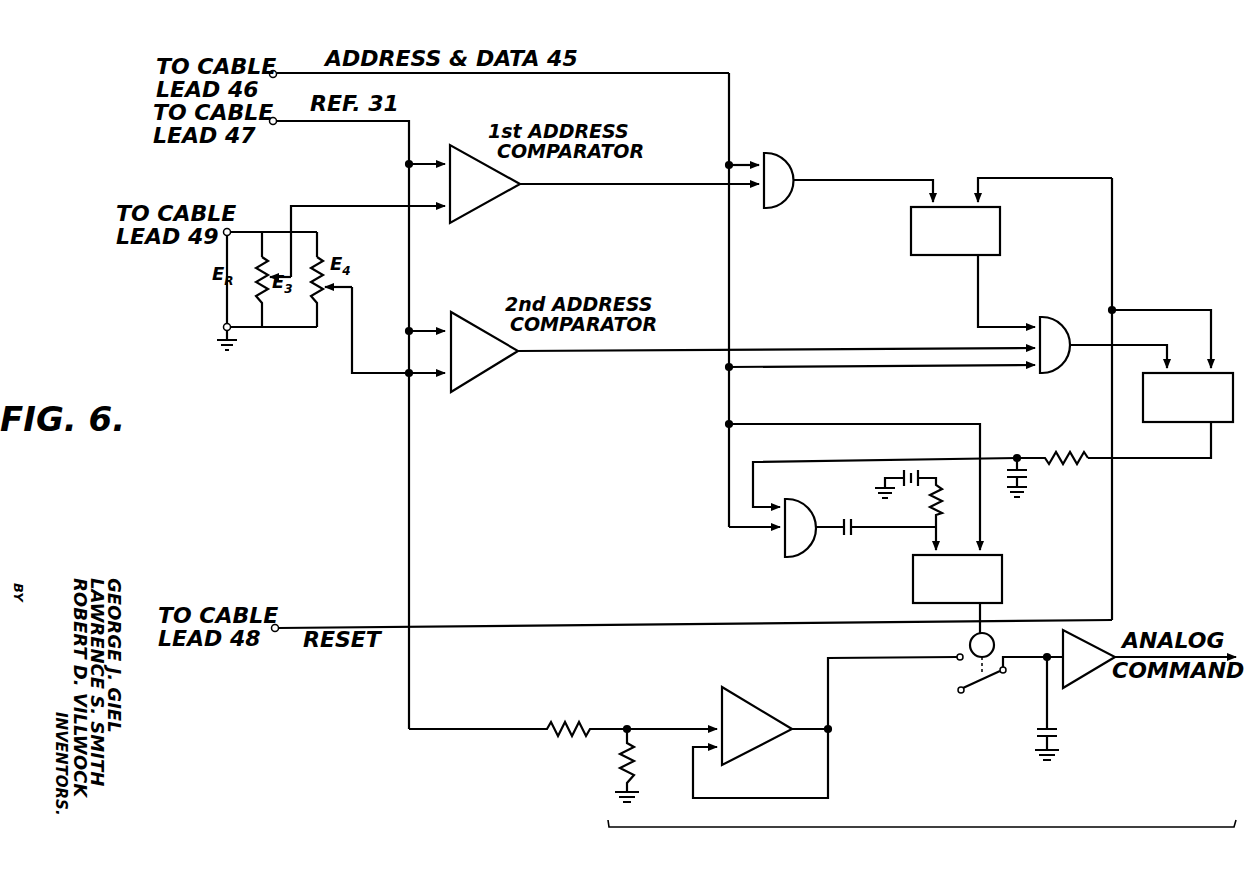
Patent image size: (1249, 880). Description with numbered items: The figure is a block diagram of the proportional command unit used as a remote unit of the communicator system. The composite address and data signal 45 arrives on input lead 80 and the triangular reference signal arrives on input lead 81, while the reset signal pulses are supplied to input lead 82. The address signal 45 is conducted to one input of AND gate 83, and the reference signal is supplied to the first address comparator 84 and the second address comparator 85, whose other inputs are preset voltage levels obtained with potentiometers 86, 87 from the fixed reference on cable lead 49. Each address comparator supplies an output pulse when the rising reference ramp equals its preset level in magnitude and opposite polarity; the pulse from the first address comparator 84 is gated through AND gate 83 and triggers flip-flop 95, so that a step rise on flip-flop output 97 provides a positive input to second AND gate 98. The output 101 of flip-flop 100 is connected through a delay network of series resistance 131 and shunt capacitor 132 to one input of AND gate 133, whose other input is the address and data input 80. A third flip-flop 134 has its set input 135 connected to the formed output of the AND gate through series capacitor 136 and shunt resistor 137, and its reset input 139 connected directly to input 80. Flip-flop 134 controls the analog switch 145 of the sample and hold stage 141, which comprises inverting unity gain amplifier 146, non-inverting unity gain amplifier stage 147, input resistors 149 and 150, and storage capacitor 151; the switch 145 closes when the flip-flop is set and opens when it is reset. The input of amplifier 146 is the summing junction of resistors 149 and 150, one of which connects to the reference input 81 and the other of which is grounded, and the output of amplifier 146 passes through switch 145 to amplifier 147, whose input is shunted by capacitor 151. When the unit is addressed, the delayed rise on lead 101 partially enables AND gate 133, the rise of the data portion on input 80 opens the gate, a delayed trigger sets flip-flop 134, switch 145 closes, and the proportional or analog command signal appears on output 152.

The input lead 80 is at (300, 72).
The input lead 81 is at (298, 123).
The composite address and data signal 45 is at (560, 70).
The cable lead 49 is at (200, 238).
The input lead 82 is at (360, 620).
The AND gate 83 is at (786, 162).
The first address comparator 84 is at (490, 130).
The second address comparator 85 is at (492, 298).
The potentiometer 86 is at (264, 303).
The potentiometer 87 is at (325, 300).
The flip-flop 95 is at (1000, 230).
The flip-flop output 97 is at (978, 290).
The second AND gate 98 is at (1062, 325).
The flip-flop 100 is at (1185, 424).
The flip-flop output 101 is at (1135, 460).
The series resistance 131 is at (1084, 436).
The shunt capacitor 132 is at (1028, 474).
The AND gate 133 is at (782, 550).
The third flip-flop 134 is at (1002, 572).
The set input 135 is at (936, 536).
The series capacitor 136 is at (852, 498).
The shunt resistor 137 is at (944, 500).
The reset input 139 is at (982, 528).
The sample and hold stage 141 is at (922, 841).
The analog switch 145 is at (970, 670).
The inverting unity gain amplifier 146 is at (752, 702).
The non-inverting unity gain amplifier stage 147 is at (1085, 675).
The input resistor 149 is at (620, 760).
The input resistor 150 is at (570, 725).
The storage capacitor 151 is at (1058, 733).
The output 152 is at (1215, 655).